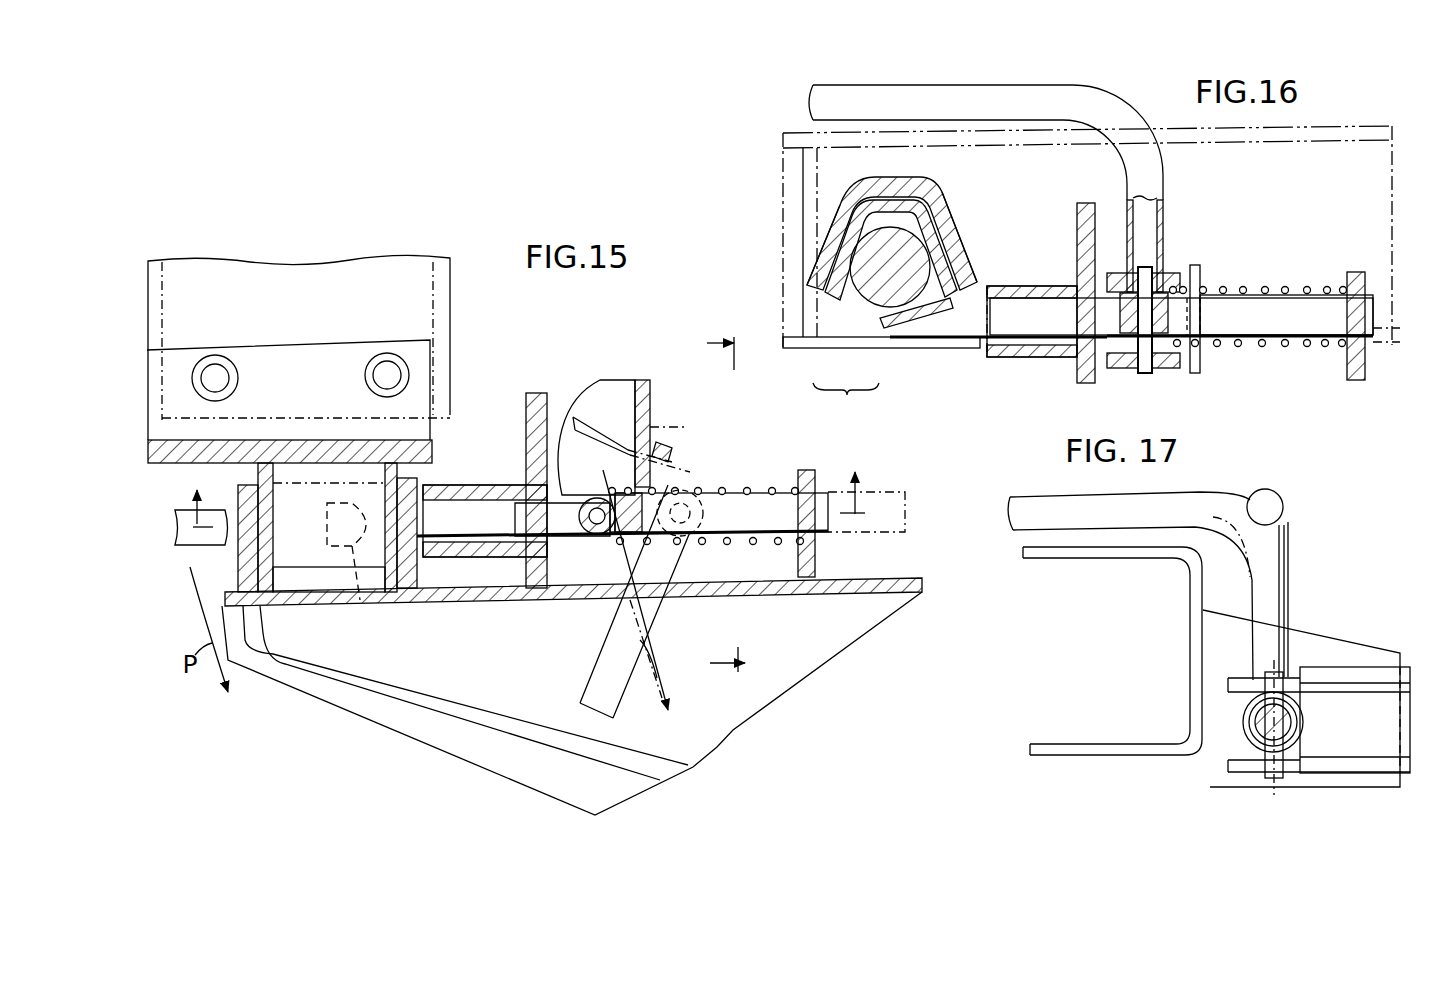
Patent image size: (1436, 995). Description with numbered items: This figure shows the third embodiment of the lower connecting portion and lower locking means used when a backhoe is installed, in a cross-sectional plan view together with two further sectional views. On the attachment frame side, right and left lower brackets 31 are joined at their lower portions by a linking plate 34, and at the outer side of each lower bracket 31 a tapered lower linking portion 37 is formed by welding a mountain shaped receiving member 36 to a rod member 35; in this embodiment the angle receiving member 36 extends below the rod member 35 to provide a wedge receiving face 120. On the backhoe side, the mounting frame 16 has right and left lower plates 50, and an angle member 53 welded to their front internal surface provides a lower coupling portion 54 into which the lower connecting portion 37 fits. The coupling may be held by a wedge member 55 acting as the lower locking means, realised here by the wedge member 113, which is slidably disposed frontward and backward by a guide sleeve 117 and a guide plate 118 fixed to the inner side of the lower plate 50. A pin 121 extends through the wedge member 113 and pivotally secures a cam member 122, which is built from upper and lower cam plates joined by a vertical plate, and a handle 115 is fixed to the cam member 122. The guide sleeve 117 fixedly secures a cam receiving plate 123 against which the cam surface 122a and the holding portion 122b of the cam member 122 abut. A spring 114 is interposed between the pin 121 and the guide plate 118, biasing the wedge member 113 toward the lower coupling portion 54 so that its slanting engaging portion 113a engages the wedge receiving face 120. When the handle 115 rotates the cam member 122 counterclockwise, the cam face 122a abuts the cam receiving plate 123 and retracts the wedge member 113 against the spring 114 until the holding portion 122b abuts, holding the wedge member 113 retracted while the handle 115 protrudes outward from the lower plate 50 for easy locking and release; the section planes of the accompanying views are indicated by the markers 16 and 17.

In FIG. 15, the linking plate 34 is at (330, 283).
In FIG. 15, the lower bracket 31 is at (323, 452).
In FIG. 15, the receiving member 36 is at (265, 470).
In FIG. 16, the receiving member 36 is at (828, 287).
In FIG. 16, the rod member 35 is at (877, 287).
In FIG. 15, the lower linking portion 37 is at (410, 470).
In FIG. 16, the lower linking portion 37 is at (846, 400).
In FIG. 15, the angle member 53 is at (250, 553).
In FIG. 16, the angle member 53 is at (903, 180).
In FIG. 15, the lower coupling portion 54 is at (266, 575).
In FIG. 16, the lower coupling portion 54 is at (969, 200).
In FIG. 15, the lower plate 50 is at (572, 594).
In FIG. 16, the lower plate 50 is at (1287, 138).
In FIG. 17, the lower plate 50 is at (1078, 748).
In FIG. 15, the wedge member 55 is at (740, 482).
In FIG. 16, the wedge member 55 is at (1206, 273).
In FIG. 17, the wedge member 55 is at (1237, 715).
In FIG. 15, the wedge member 113 is at (483, 522).
In FIG. 16, the wedge member 113 is at (1053, 318).
In FIG. 17, the wedge member 113 is at (1245, 732).
In FIG. 15, the engaging portion 113a is at (363, 600).
In FIG. 16, the engaging portion 113a is at (922, 330).
In FIG. 15, the spring 114 is at (755, 545).
In FIG. 16, the spring 114 is at (1286, 291).
In FIG. 17, the spring 114 is at (1302, 715).
In FIG. 15, the handle 115 is at (190, 546).
In FIG. 16, the handle 115 is at (1127, 120).
In FIG. 17, the handle 115 is at (1258, 491).
In FIG. 15, the guide sleeve 117 is at (517, 537).
In FIG. 16, the guide sleeve 117 is at (1010, 353).
In FIG. 15, the guide plate 118 is at (820, 560).
In FIG. 16, the guide plate 118 is at (1352, 358).
In FIG. 16, the wedge receiving face 120 is at (977, 290).
In FIG. 15, the pin 121 is at (590, 533).
In FIG. 16, the pin 121 is at (1145, 375).
In FIG. 17, the pin 121 is at (1276, 779).
In FIG. 15, the cam member 122 is at (662, 448).
In FIG. 16, the cam member 122 is at (1180, 273).
In FIG. 17, the cam member 122 is at (1337, 677).
In FIG. 15, the cam surface 122a is at (563, 423).
In FIG. 15, the holding portion 122b is at (624, 380).
In FIG. 15, the cam receiving plate 123 is at (533, 405).
In FIG. 16, the cam receiving plate 123 is at (1085, 208).
In FIG. 17, the cam receiving plate 123 is at (1308, 647).
In FIG. 15, the mounting frame 16 is at (532, 488).
In FIG. 15, the section line 17 is at (721, 506).